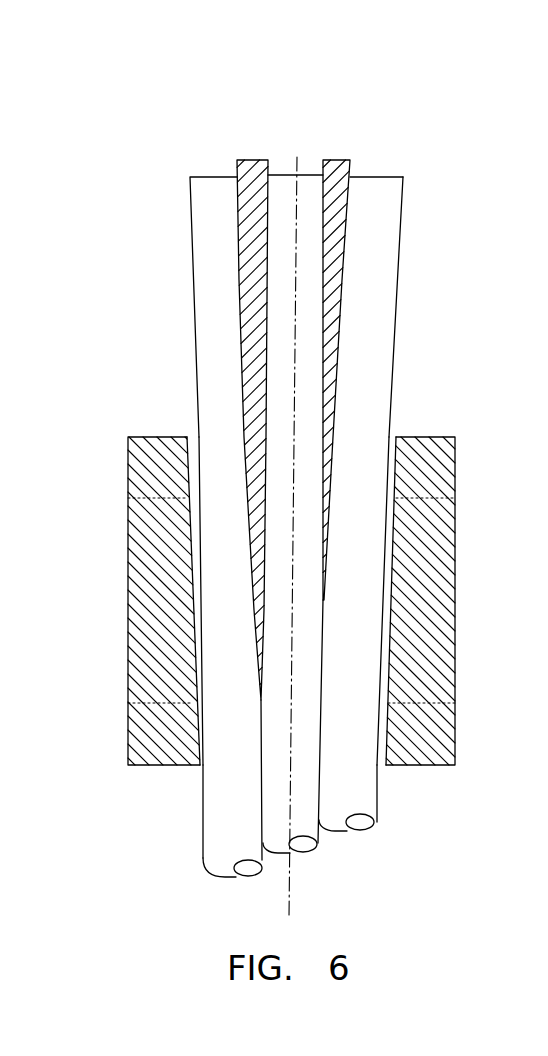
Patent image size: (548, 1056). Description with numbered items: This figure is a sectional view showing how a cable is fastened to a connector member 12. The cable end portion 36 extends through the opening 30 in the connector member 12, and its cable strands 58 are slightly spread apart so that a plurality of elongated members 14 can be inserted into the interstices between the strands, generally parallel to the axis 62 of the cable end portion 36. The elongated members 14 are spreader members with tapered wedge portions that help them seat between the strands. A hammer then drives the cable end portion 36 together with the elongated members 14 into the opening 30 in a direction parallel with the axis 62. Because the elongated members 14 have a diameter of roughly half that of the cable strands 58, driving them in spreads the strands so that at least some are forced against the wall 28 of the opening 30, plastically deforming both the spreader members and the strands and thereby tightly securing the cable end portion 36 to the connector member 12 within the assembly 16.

The connector member 12 is at (136, 576).
The elongated members 14 is at (255, 160).
The die block 16 is at (143, 436).
The wall 28 is at (190, 637).
The opening 30 is at (388, 543).
The cable end portion 36 is at (395, 364).
The cable strands 58 is at (212, 185).
The axis 62 is at (288, 774).